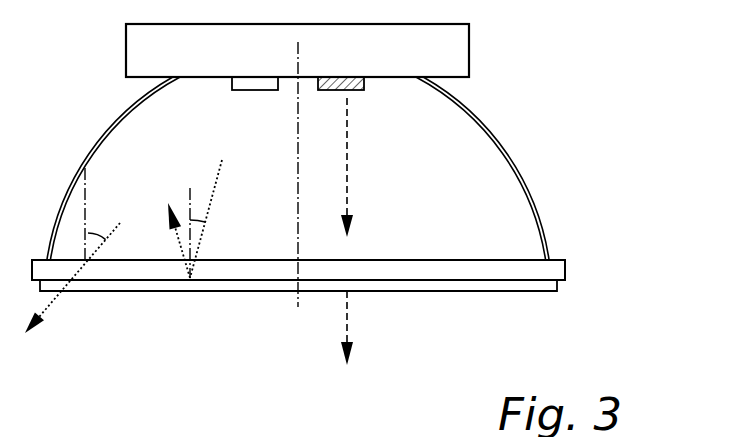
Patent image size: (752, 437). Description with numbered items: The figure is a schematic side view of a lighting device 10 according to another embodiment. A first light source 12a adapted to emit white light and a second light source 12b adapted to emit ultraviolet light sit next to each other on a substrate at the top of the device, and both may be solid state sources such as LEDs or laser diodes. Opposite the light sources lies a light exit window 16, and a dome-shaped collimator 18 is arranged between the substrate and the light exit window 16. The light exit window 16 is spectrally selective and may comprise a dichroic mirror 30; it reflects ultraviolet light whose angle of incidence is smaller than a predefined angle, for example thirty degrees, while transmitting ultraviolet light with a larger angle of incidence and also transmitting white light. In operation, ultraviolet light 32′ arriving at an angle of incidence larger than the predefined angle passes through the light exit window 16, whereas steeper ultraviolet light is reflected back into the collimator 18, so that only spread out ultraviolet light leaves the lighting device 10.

The lighting device 10 is at (352, 187).
The first light source 12a is at (366, 80).
The second light source 12b is at (232, 79).
The light exit window 16 is at (566, 271).
The collimator 18 is at (543, 218).
The dichroic mirror 30 is at (538, 291).
The ultraviolet light 32′ is at (72, 269).